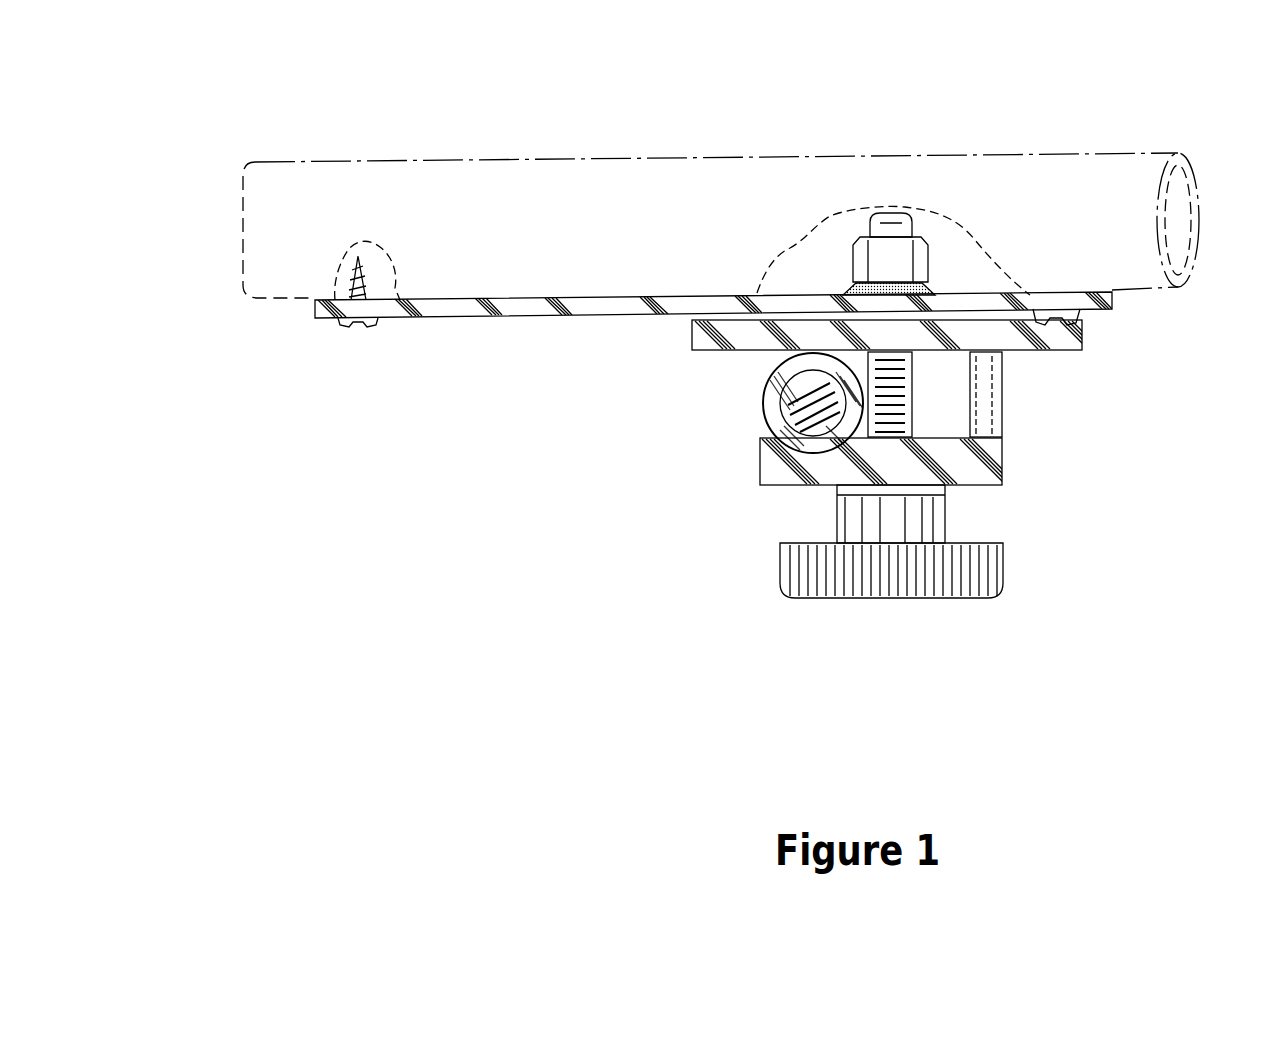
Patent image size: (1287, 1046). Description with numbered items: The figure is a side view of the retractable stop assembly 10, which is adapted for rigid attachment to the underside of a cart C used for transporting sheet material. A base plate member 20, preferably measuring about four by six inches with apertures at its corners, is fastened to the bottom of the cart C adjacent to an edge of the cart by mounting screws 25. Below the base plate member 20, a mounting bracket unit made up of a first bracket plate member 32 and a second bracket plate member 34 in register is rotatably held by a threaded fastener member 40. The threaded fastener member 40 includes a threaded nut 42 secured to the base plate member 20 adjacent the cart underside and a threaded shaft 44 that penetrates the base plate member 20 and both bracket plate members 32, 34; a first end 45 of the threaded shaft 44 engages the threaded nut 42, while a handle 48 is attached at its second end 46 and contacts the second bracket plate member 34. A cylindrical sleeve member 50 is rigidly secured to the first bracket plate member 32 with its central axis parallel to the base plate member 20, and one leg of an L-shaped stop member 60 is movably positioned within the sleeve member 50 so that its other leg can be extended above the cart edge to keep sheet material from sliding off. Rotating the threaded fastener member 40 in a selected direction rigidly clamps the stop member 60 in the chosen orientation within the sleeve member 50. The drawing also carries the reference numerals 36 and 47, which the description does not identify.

The cart C is at (390, 185).
The retractable stop assembly 10 is at (436, 565).
The base plate member 20 is at (460, 307).
The mounting screws 25 is at (345, 328).
The first bracket plate member 32 is at (693, 342).
The second bracket plate member 34 is at (985, 463).
The spacer post 36 is at (985, 378).
The threaded fastener member 40 is at (838, 625).
The threaded nut 42 is at (925, 237).
The threaded shaft 44 is at (913, 400).
The first end 45 is at (905, 213).
The second end 46 is at (955, 523).
The rotation direction arrow 47 is at (950, 490).
The handle 48 is at (953, 577).
The cylindrical sleeve member 50 is at (775, 372).
The L-shaped stop member 60 is at (810, 407).